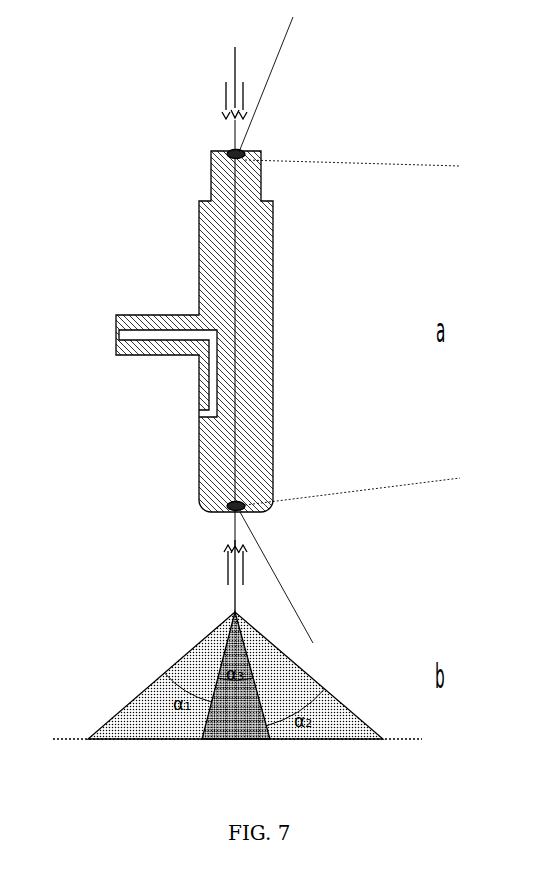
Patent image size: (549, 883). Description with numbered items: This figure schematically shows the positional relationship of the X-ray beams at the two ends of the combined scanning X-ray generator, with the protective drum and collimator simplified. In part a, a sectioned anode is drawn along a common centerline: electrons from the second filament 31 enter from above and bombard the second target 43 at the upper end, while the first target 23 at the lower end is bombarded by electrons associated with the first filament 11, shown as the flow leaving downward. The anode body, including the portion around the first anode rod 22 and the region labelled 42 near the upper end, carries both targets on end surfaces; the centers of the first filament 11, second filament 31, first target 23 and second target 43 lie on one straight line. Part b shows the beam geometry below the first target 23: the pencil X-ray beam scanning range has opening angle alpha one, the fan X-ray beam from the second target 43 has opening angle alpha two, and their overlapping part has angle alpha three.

The first filament 11 is at (225, 552).
The first anode rod 22 is at (222, 452).
The first target 23 is at (228, 510).
The second filament 31 is at (227, 114).
The nozzle body 42 is at (212, 201).
The second target 43 is at (224, 151).